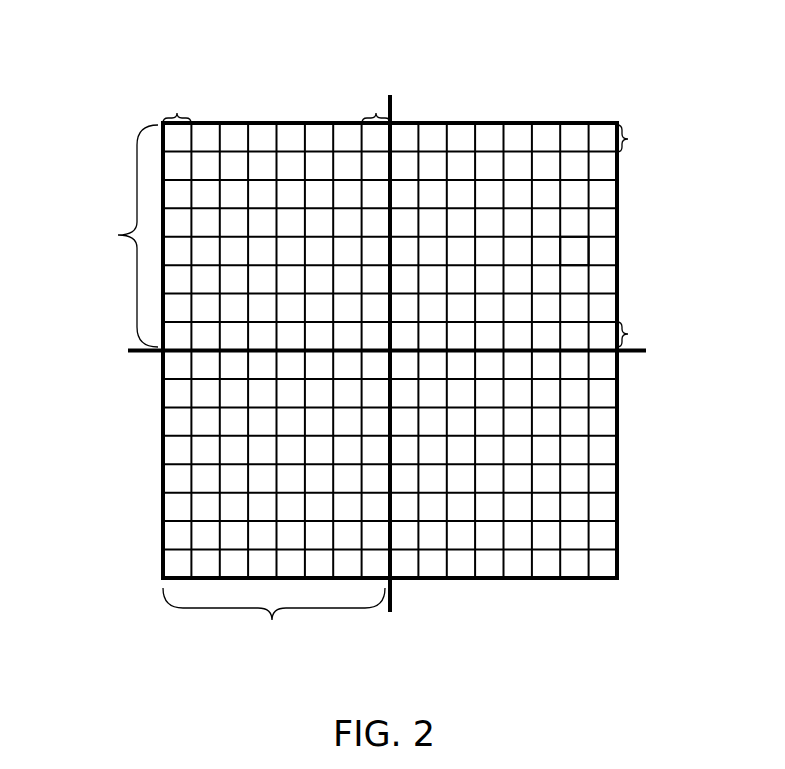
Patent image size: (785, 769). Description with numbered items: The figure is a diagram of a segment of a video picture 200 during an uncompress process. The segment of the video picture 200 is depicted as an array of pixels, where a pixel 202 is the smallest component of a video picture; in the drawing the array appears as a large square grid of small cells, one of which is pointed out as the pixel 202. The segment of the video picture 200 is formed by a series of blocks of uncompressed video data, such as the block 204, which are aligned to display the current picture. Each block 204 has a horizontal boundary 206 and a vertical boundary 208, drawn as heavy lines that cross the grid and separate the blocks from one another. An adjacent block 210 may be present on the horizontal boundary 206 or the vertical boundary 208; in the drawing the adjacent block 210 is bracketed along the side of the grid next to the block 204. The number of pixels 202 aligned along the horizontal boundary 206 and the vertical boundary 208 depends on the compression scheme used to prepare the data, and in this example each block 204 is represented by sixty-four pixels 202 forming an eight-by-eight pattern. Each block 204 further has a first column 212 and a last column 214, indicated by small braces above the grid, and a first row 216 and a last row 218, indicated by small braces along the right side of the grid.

The segment of a video picture 200 is at (147, 58).
The pixel 202 is at (571, 256).
The block 204 is at (272, 620).
The horizontal boundary 206 is at (457, 582).
The vertical boundary 208 is at (618, 507).
The adjacent block 210 is at (118, 235).
The first column 212 is at (376, 113).
The last column 214 is at (177, 113).
The first row 216 is at (628, 334).
The last row 218 is at (628, 139).